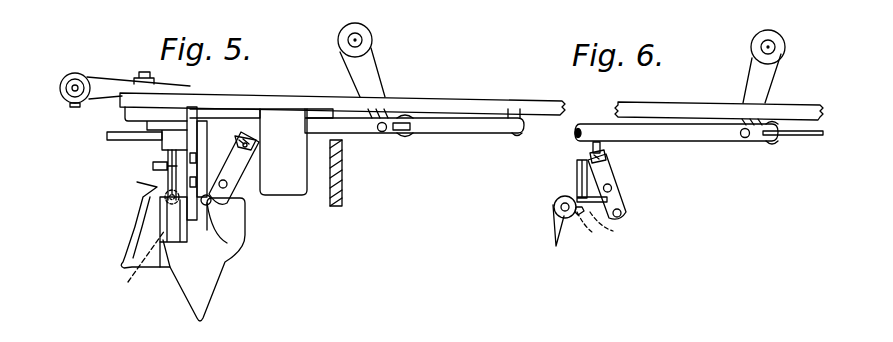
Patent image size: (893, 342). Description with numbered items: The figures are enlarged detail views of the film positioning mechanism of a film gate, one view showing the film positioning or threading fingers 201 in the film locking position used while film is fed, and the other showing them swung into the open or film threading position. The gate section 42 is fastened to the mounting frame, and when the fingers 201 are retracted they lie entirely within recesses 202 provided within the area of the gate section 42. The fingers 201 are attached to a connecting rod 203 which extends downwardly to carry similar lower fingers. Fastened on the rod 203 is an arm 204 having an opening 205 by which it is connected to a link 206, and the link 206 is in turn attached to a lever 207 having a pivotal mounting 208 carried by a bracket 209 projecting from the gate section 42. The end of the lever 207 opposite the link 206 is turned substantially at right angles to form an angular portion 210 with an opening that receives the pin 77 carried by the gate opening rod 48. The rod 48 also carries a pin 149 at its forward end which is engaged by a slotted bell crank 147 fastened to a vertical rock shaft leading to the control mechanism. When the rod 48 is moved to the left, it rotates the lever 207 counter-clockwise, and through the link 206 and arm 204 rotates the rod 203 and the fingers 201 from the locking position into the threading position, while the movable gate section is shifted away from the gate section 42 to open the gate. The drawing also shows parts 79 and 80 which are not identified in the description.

In FIG. 5, the slotted bell crank 147 is at (378, 79).
In FIG. 6, the slotted bell crank 147 is at (770, 81).
In FIG. 5, the gate opening rod 48 is at (362, 133).
In FIG. 6, the gate opening rod 48 is at (733, 142).
In FIG. 5, the pin 149 is at (384, 132).
In FIG. 6, the pin 149 is at (745, 133).
In FIG. 5, the pin 77 is at (205, 195).
In FIG. 6, the pin 77 is at (592, 145).
In FIG. 5, the bracket block 79 is at (267, 135).
In FIG. 5, the bracket 209 is at (210, 168).
In FIG. 6, the bracket 209 is at (592, 172).
In FIG. 5, the angular portion 210 is at (257, 143).
In FIG. 6, the angular portion 210 is at (605, 154).
In FIG. 5, the lever 207 is at (238, 168).
In FIG. 6, the lever 207 is at (618, 198).
In FIG. 5, the pivotal mounting 208 is at (228, 190).
In FIG. 6, the pivotal mounting 208 is at (618, 184).
In FIG. 5, the link 206 is at (229, 244).
In FIG. 6, the link 206 is at (624, 218).
In FIG. 5, the blade 80 is at (177, 230).
In FIG. 5, the gate section 42 is at (157, 165).
In FIG. 5, the film positioning or threading fingers 201 is at (140, 183).
In FIG. 6, the film positioning or threading fingers 201 is at (555, 227).
In FIG. 5, the recesses 202 is at (129, 267).
In FIG. 5, the connecting rod 203 is at (163, 205).
In FIG. 6, the connecting rod 203 is at (567, 196).
In FIG. 6, the arm 204 is at (581, 231).
In FIG. 6, the opening 205 is at (614, 229).